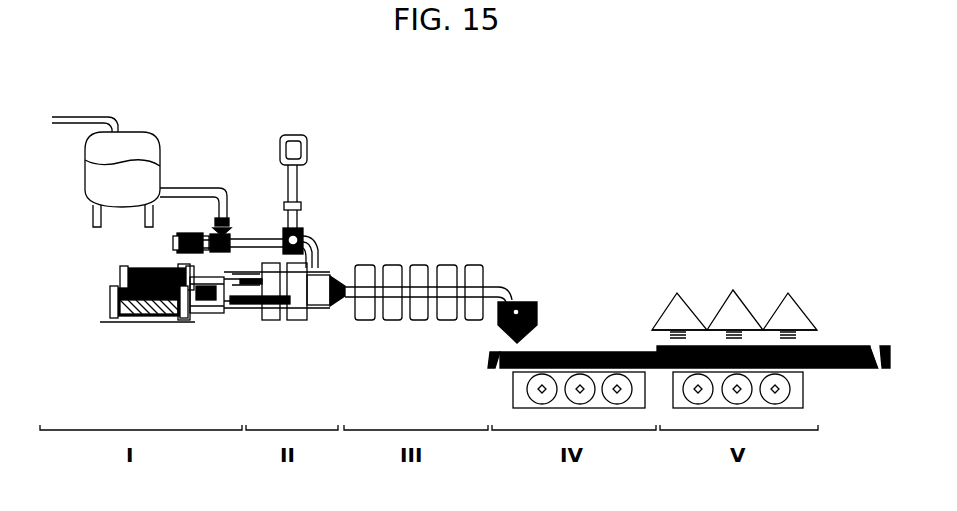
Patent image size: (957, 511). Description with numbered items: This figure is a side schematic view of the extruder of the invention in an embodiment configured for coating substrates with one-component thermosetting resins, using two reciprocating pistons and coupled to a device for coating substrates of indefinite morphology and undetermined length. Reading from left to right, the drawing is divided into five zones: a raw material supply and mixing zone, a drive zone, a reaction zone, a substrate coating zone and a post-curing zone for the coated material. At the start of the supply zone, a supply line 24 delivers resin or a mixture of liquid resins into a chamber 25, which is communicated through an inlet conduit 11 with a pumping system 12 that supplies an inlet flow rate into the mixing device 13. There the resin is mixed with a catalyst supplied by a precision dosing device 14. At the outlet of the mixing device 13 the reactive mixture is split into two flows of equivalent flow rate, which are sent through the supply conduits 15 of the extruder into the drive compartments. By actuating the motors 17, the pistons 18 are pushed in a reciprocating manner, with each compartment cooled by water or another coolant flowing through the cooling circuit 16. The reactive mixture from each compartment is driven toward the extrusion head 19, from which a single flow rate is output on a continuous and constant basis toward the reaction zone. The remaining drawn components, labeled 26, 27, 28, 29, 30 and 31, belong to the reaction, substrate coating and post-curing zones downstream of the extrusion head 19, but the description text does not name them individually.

The inlet conduit 11 is at (187, 187).
The pumping system 12 is at (176, 240).
The mixing device 13 is at (283, 232).
The precision dosing device 14 is at (292, 133).
The supply conduits 15 is at (318, 236).
The cooling circuit 16 is at (298, 322).
The motors 17 is at (123, 297).
The pistons 18 is at (230, 311).
The extrusion head 19 is at (338, 276).
The supply line 24 is at (95, 117).
The chamber 25 is at (140, 147).
The cooling section 26 is at (446, 265).
The cutter hopper 27 is at (522, 300).
The conveyor belt start 28 is at (489, 356).
The conveyor belt 29 is at (556, 341).
The product heaps 30 is at (780, 305).
The conveyor belt end 31 is at (849, 344).